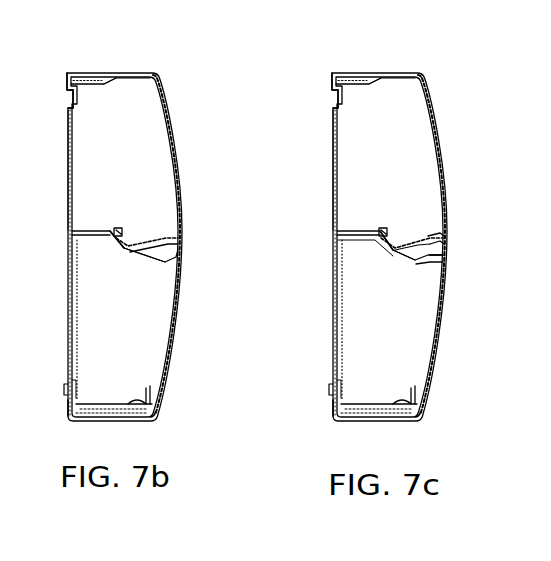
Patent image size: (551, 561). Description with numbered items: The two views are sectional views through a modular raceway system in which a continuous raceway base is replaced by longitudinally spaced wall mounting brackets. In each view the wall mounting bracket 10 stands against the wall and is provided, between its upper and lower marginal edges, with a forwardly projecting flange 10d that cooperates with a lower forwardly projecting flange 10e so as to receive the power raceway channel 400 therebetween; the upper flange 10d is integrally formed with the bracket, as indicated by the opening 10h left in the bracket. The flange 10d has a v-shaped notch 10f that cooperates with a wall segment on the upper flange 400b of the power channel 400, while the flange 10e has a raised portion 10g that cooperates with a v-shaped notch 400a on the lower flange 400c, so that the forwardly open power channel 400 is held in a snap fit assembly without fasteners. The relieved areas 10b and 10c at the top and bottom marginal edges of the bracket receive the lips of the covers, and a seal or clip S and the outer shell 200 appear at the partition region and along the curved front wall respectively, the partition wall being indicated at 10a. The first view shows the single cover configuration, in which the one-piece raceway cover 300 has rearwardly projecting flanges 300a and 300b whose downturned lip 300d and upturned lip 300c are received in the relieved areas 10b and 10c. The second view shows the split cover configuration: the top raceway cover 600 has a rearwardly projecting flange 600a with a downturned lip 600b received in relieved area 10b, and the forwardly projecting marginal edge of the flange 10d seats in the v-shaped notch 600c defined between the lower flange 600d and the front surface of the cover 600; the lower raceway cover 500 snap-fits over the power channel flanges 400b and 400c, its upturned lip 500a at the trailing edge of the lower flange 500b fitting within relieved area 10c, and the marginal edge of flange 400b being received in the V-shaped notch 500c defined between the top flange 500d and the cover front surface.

In FIG. 7B, the wall mounting bracket 10 is at (50, 185).
In FIG. 7C, the wall mounting bracket 10 is at (311, 197).
In FIG. 7B, the partition wall 10a is at (72, 232).
In FIG. 7C, the partition wall 10a is at (320, 267).
In FIG. 7B, the relieved area 10b is at (68, 102).
In FIG. 7C, the relieved area 10b is at (333, 102).
In FIG. 7B, the relieved area 10c is at (68, 392).
In FIG. 7C, the relieved area 10c is at (333, 395).
In FIG. 7B, the forwardly projecting flange 10d is at (173, 229).
In FIG. 7C, the forwardly projecting flange 10d is at (433, 232).
In FIG. 7B, the forwardly projecting flange 10e is at (155, 416).
In FIG. 7C, the forwardly projecting flange 10e is at (420, 417).
In FIG. 7B, the v-shaped notch 10f is at (134, 236).
In FIG. 7C, the v-shaped notch 10f is at (407, 230).
In FIG. 7B, the raised portion 10g is at (108, 397).
In FIG. 7C, the raised portion 10g is at (373, 400).
In FIG. 7B, the opening 10h is at (68, 145).
In FIG. 7C, the opening 10h is at (332, 153).
In FIG. 7B, the seal clip S is at (123, 228).
In FIG. 7C, the seal clip S is at (388, 224).
In FIG. 7B, the outer shell 200 is at (182, 131).
In FIG. 7C, the outer shell 200 is at (446, 138).
In FIG. 7B, the raceway cover 300 is at (168, 98).
In FIG. 7B, the rearwardly projecting flange 300a is at (115, 75).
In FIG. 7B, the rearwardly projecting flange 300b is at (88, 420).
In FIG. 7B, the upturned lip 300c is at (68, 405).
In FIG. 7B, the downturned lip 300d is at (70, 92).
In FIG. 7B, the power raceway channel 400 is at (66, 270).
In FIG. 7C, the power raceway channel 400 is at (326, 323).
In FIG. 7B, the v-shaped notch 400a is at (113, 400).
In FIG. 7C, the v-shaped notch 400a is at (375, 400).
In FIG. 7B, the upper flange 400b is at (153, 262).
In FIG. 7C, the upper flange 400b is at (412, 262).
In FIG. 7B, the lower flange 400c is at (148, 394).
In FIG. 7C, the lower flange 400c is at (410, 400).
In FIG. 7C, the raceway cover 500 is at (450, 326).
In FIG. 7C, the upturned lip 500a is at (332, 410).
In FIG. 7C, the lower flange 500b is at (357, 417).
In FIG. 7C, the V-shaped notch 500c is at (446, 262).
In FIG. 7C, the top flange 500d is at (392, 258).
In FIG. 7C, the top raceway cover 600 is at (432, 110).
In FIG. 7C, the rearwardly projecting flange 600a is at (412, 63).
In FIG. 7C, the downturned lip 600b is at (332, 96).
In FIG. 7C, the v-shaped notch 600c is at (444, 236).
In FIG. 7C, the lower flange 600d is at (412, 232).